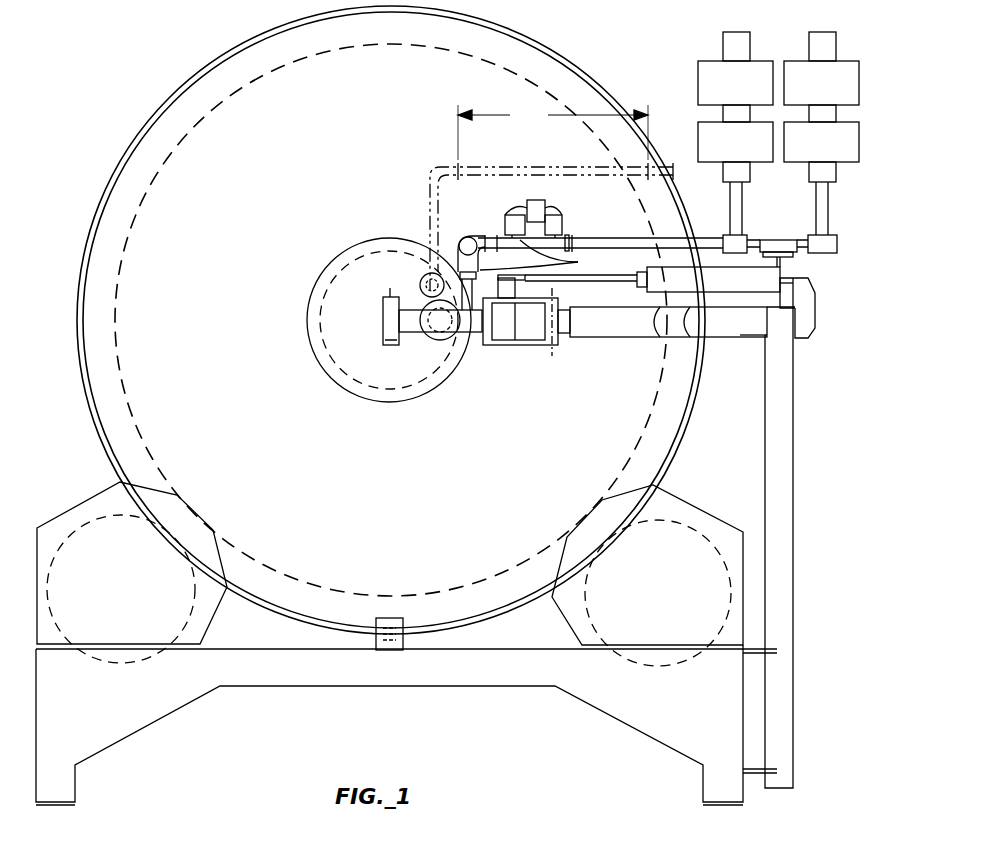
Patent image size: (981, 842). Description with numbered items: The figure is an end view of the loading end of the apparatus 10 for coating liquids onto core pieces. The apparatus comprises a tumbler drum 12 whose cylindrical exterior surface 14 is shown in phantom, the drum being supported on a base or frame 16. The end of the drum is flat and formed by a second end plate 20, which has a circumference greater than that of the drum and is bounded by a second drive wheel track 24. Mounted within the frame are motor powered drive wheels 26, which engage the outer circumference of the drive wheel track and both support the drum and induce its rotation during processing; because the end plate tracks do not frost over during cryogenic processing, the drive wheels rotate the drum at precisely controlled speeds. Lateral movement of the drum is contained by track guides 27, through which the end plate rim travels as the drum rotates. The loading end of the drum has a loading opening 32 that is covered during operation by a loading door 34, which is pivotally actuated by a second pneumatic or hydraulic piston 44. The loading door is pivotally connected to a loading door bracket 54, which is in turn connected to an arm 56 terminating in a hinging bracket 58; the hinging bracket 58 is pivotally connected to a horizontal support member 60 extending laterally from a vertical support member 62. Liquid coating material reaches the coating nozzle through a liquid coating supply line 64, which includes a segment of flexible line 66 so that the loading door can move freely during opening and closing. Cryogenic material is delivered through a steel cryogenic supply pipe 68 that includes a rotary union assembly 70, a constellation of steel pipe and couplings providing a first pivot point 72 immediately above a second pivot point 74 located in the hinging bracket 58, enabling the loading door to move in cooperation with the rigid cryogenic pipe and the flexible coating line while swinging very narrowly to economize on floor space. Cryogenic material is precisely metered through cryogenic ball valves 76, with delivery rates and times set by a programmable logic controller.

The apparatus for coating liquids onto core pieces 10 is at (160, 50).
The tumbler drum 12 is at (147, 228).
The cylindrical exterior surface 14 is at (115, 290).
The base or frame 16 is at (110, 730).
The second end plate 20 is at (103, 325).
The second drive wheel track 24 is at (83, 382).
The drive wheels 26 is at (112, 532).
The track guides 27 is at (390, 623).
The loading opening 32 is at (322, 290).
The loading door 34 is at (352, 348).
The second pneumatic or hydraulic piston 44 is at (762, 280).
The loading door bracket 54 is at (396, 338).
The arm 56 is at (466, 335).
The hinging bracket 58 is at (527, 340).
The horizontal support member 60 is at (640, 327).
The vertical support member 62 is at (795, 392).
The liquid coating supply line 64 is at (673, 176).
The flexible line 66 is at (553, 131).
The cryogenic supply pipe 68 is at (594, 236).
The rotary union assembly 70 is at (556, 262).
The first pivot point 72 is at (545, 216).
The second pivot point 74 is at (553, 347).
The cryogenic ball valves 76 is at (738, 32).